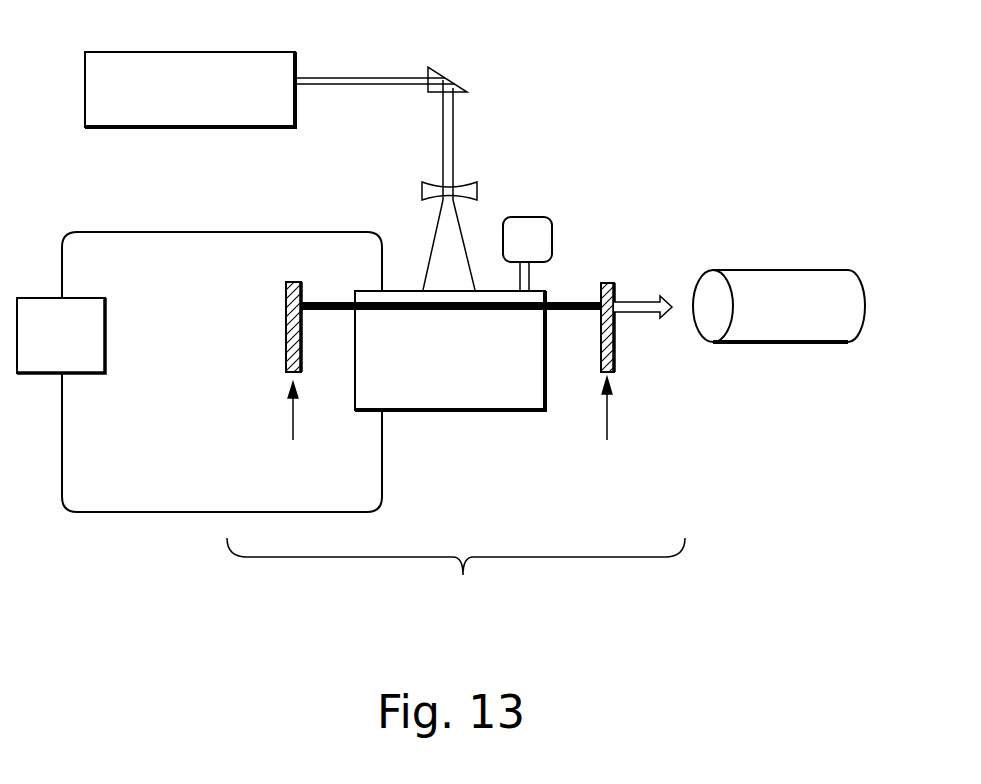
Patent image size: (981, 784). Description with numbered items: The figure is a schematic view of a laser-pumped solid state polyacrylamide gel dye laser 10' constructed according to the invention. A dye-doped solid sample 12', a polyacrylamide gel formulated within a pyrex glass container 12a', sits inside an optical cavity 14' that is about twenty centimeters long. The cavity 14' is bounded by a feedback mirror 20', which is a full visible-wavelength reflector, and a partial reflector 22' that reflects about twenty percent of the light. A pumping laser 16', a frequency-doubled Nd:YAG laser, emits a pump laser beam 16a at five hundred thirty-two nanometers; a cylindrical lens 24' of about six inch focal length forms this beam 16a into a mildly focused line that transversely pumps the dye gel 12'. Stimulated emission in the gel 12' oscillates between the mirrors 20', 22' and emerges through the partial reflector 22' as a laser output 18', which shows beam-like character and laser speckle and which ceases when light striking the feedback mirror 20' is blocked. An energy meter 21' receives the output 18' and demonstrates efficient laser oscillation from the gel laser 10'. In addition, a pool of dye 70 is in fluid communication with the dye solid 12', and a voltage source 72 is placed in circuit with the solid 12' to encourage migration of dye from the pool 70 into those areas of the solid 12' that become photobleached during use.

The solid state dye laser 10' is at (765, 88).
The dye-doped solid sample 12' is at (450, 350).
The glass container 12a' is at (450, 434).
The optical cavity 14' is at (456, 574).
The pumping laser 16' is at (190, 115).
The pump laser beam 16a is at (337, 71).
The laser output 18' is at (652, 329).
The feedback mirror 20' is at (292, 395).
The energy meter 21' is at (779, 329).
The partial reflector 22' is at (611, 384).
The cylindrical lens 24' is at (536, 166).
The pool of dye 70 is at (552, 240).
The voltage source 72 is at (105, 330).